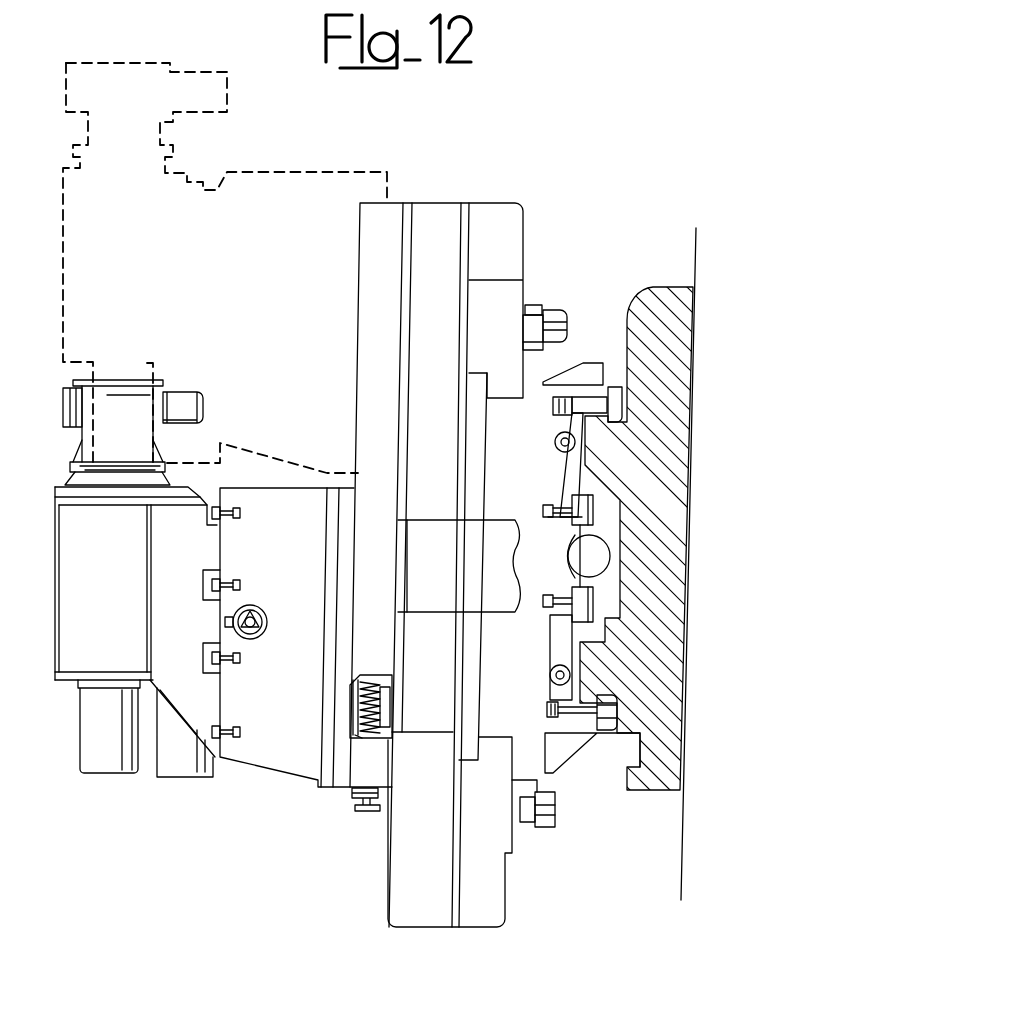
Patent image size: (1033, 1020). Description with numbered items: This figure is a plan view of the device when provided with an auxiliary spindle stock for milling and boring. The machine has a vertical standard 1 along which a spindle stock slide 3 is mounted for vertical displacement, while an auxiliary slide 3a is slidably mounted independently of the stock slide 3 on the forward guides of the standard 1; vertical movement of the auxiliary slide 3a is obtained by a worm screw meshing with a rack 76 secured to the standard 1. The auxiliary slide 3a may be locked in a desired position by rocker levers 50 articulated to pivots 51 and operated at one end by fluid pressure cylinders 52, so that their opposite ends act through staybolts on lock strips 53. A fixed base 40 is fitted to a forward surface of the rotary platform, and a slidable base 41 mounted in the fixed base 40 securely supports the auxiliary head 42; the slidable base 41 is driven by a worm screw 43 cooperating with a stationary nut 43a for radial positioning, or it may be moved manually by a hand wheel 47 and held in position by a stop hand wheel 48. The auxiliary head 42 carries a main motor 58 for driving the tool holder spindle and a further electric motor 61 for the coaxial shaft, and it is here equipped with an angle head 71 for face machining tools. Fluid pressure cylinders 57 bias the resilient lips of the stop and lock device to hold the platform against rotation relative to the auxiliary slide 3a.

The vertical standard 1 is at (660, 292).
The spindle stock slide 3 is at (430, 934).
The auxiliary slide 3a is at (548, 380).
The fixed base 40 is at (372, 320).
The slidable base 41 is at (258, 750).
The auxiliary head 42 is at (68, 692).
The worm screw 43 is at (370, 678).
The stationary nut 43a is at (355, 707).
The hand wheel 47 is at (362, 812).
The stop hand wheel 48 is at (255, 605).
The rocker lever 50 is at (546, 466).
The pivot 51 is at (556, 438).
The fluid pressure cylinder 52 is at (568, 560).
The lock strip 53 is at (613, 385).
The fluid pressure cylinder 57 is at (565, 305).
The main motor 58 is at (180, 762).
The electric motor 61 is at (102, 758).
The angle head 71 is at (117, 387).
The rack 76 is at (615, 543).